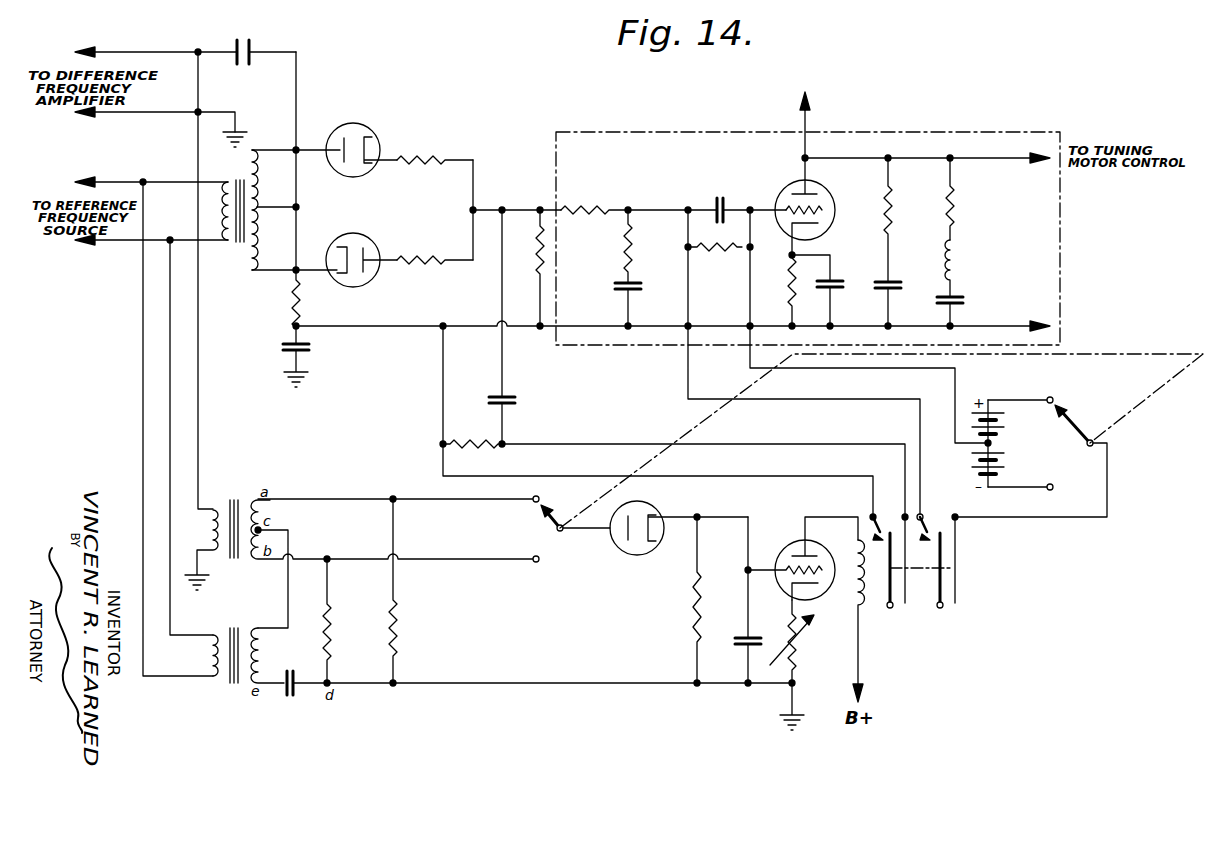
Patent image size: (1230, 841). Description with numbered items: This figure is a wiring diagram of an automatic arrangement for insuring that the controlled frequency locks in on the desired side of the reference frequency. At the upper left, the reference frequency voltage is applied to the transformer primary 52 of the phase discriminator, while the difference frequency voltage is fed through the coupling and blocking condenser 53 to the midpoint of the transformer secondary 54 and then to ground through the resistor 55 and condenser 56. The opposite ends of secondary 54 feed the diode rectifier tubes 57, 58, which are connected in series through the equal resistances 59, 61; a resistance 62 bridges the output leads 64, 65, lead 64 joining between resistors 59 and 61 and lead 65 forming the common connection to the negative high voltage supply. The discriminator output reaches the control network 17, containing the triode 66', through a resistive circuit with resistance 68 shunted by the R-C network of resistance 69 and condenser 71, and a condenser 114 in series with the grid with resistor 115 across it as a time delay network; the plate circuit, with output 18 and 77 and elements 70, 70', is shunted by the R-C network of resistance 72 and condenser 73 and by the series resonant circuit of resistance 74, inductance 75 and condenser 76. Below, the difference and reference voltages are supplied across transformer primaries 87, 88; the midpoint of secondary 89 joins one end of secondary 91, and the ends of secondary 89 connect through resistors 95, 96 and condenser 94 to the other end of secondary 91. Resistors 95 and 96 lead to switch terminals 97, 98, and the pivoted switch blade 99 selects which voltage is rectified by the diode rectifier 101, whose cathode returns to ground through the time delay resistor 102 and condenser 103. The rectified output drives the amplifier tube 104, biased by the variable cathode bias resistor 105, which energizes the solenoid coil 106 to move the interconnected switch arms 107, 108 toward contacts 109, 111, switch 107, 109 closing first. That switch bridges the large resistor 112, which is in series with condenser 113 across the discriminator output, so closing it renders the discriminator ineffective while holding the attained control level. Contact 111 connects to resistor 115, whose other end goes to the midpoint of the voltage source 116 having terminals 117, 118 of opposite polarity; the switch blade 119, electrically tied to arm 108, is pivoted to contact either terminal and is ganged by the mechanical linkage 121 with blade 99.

The control network 17 is at (718, 131).
The output conductor to tuning motor control 18 is at (810, 112).
The transformer primary 52 is at (223, 246).
The condenser 53 is at (249, 48).
The transformer secondary 54 is at (253, 274).
The resistor 55 is at (304, 300).
The condenser 56 is at (280, 350).
The diode rectifier tube 57 is at (372, 131).
The diode rectifier tube 58 is at (369, 236).
The resistance 59 is at (432, 156).
The resistance 61 is at (420, 256).
The resistance 62 is at (536, 266).
The output lead 64 is at (490, 206).
The output lead 65 is at (515, 333).
The triode 66' is at (816, 182).
The resistance 68 is at (594, 205).
The resistance 69 is at (634, 240).
The cathode resistor 70 is at (777, 290).
The cathode bypass capacitor 70' is at (823, 286).
The condenser 71 is at (642, 289).
The resistance 72 is at (899, 211).
The condenser 73 is at (897, 280).
The resistance 74 is at (956, 194).
The inductance 75 is at (956, 258).
The condenser 76 is at (963, 297).
The output conductor 77 is at (1018, 156).
The transformer primary 87 is at (217, 505).
The transformer primary 88 is at (221, 680).
The transformer secondary 89 is at (253, 497).
The transformer secondary 91 is at (252, 628).
The condenser 94 is at (293, 698).
The resistor 95 is at (333, 630).
The resistor 96 is at (405, 626).
The switch terminal 97 is at (537, 563).
The switch terminal 98 is at (530, 497).
The switch blade 99 is at (553, 521).
The diode rectifier 101 is at (652, 510).
The resistor 102 is at (690, 598).
The condenser 103 is at (733, 645).
The amplifier tube 104 is at (786, 548).
The variable cathode bias resistor 105 is at (800, 651).
The solenoid coil 106 is at (852, 578).
The pivoted switch arm 107 is at (889, 600).
The pivoted switch arm 108 is at (952, 588).
The contact 109 is at (872, 512).
The contact 111 is at (926, 512).
The resistor 112 is at (470, 441).
The condenser 113 is at (516, 400).
The condenser 114 is at (723, 198).
The resistor 115 is at (715, 256).
The voltage source 116 is at (1000, 460).
The terminal 117 is at (1050, 490).
The terminal 118 is at (1053, 397).
The switch blade 119 is at (1075, 424).
The mechanical linkage 121 is at (1137, 404).